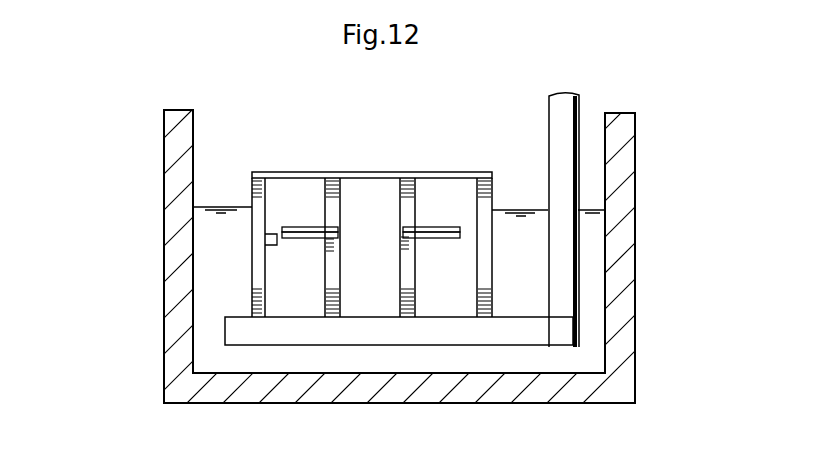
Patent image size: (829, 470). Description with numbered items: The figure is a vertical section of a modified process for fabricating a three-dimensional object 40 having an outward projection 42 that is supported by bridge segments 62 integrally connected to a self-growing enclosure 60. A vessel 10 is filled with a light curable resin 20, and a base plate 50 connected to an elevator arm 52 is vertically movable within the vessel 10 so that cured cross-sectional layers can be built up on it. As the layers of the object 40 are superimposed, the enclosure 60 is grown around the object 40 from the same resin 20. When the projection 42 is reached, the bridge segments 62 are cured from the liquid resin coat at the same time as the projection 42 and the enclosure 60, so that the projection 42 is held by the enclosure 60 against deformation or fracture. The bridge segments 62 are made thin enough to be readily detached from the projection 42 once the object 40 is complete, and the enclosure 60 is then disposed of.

The vessel 10 is at (633, 228).
The light curable resin 20 is at (213, 237).
The three-dimensional object 40 is at (321, 187).
The outward projection 42 is at (430, 228).
The base plate 50 is at (418, 336).
The elevator arm 52 is at (567, 110).
The self-growing enclosure 60 is at (493, 185).
The bridge segments 62 is at (467, 240).